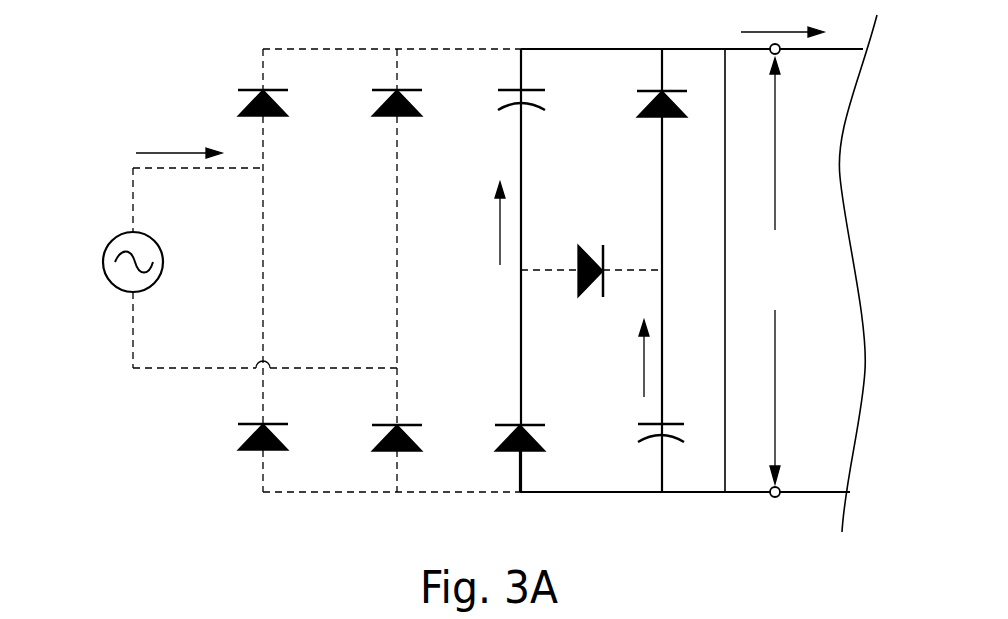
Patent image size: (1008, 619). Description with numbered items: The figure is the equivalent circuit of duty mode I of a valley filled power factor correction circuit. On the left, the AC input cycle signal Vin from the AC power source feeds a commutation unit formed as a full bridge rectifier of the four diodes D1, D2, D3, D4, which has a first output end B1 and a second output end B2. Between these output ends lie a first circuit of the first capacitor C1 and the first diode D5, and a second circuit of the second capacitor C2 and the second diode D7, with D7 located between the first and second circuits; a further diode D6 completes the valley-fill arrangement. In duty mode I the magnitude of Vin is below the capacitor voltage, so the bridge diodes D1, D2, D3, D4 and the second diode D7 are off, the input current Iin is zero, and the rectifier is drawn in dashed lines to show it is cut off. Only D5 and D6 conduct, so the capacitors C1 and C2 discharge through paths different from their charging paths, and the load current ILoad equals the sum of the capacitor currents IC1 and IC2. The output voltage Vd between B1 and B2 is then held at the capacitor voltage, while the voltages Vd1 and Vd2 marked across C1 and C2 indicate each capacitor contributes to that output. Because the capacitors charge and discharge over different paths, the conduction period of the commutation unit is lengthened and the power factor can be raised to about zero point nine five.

The diode D1 is at (245, 97).
The diode D2 is at (244, 431).
The diode D3 is at (381, 97).
The diode D4 is at (380, 432).
The first diode D5 is at (502, 432).
The diode D6 is at (646, 98).
The second diode D7 is at (594, 250).
The first capacitor C1 is at (503, 97).
The second capacitor C2 is at (643, 432).
The AC input cycle signal Vin is at (108, 262).
The input current Iin is at (179, 138).
The first capacitor current IC1 is at (480, 223).
The second capacitor current IC2 is at (624, 358).
The load current ILoad is at (778, 18).
The output voltage Vd is at (782, 300).
The voltage across C1 Vd1 is at (576, 128).
The voltage across C2 Vd2 is at (716, 460).
The first output end B1 is at (780, 52).
The second output end B2 is at (779, 489).